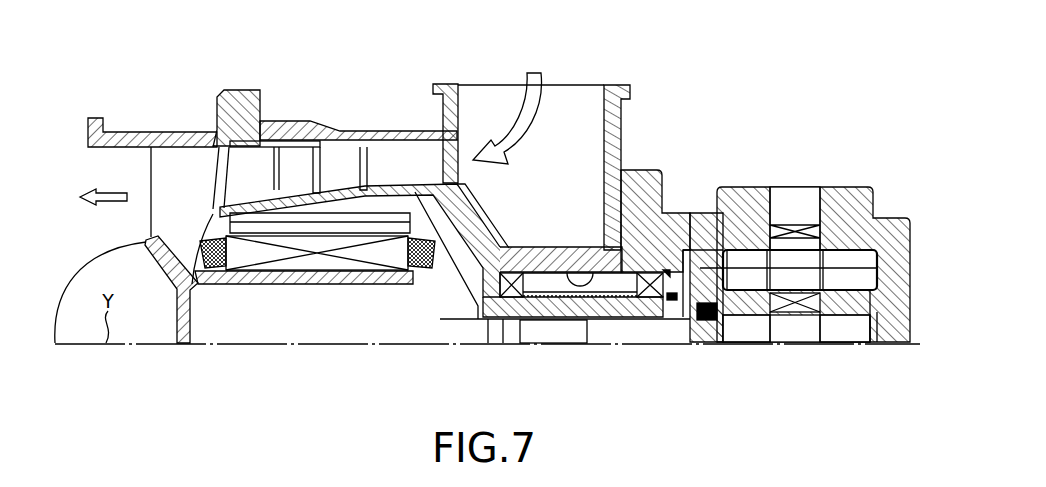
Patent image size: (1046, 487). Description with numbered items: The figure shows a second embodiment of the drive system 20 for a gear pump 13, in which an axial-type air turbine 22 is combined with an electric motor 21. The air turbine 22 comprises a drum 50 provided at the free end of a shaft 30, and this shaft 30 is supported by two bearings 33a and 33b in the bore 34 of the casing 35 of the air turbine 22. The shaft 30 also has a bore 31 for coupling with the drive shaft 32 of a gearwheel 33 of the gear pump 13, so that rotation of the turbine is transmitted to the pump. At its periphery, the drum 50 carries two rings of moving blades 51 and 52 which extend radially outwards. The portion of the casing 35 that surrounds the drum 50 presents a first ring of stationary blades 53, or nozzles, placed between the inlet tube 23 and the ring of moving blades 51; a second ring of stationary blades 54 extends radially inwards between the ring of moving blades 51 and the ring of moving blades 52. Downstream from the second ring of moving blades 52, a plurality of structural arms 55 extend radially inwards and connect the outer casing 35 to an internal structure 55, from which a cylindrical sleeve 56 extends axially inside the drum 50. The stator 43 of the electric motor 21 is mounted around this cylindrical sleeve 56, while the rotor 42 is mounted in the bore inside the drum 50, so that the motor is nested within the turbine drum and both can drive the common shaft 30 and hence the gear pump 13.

The gear pump 13 is at (797, 252).
The drive system 20 is at (682, 102).
The electric motor 21 is at (295, 317).
The air turbine 22 is at (412, 98).
The inlet tube 23 is at (578, 141).
The shaft 30 is at (530, 320).
The bore 31 is at (560, 326).
The drive shaft 32 is at (742, 346).
The gearwheel 33 is at (796, 346).
The bearing 33a is at (485, 325).
The bearing 33b is at (647, 318).
The bore 34 is at (563, 262).
The casing 35 is at (628, 172).
The rotor 42 is at (380, 244).
The stator 43 is at (337, 266).
The drum 50 is at (370, 180).
The ring of moving blades 51 is at (335, 158).
The ring of moving blades 52 is at (253, 170).
The first ring of stationary blades 53 is at (457, 155).
The second ring of stationary blades 54 is at (293, 157).
The structural arms 55 is at (183, 167).
The cylindrical sleeve 56 is at (250, 283).